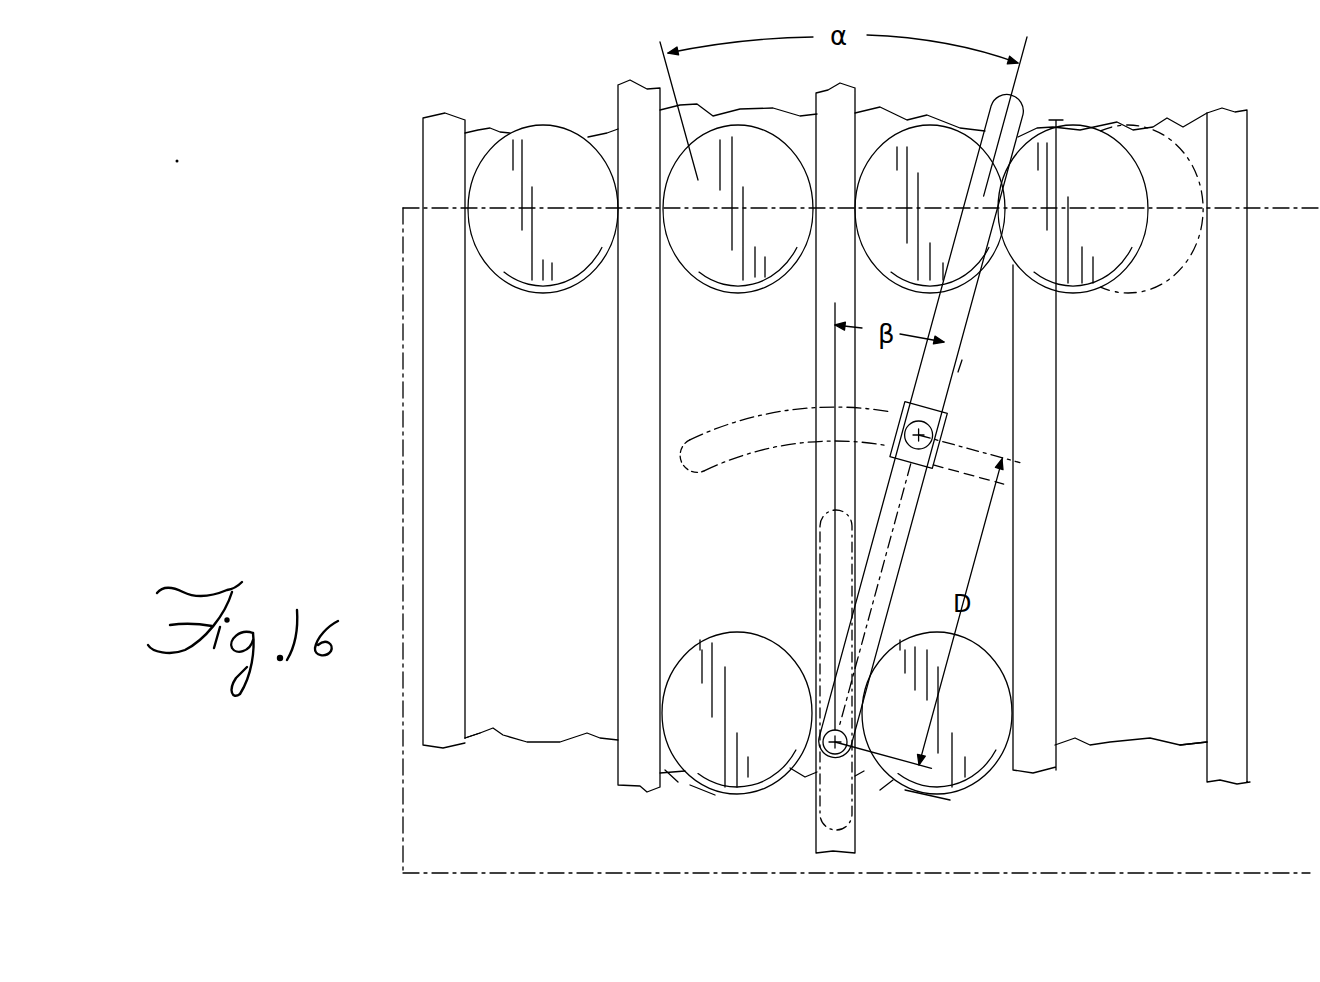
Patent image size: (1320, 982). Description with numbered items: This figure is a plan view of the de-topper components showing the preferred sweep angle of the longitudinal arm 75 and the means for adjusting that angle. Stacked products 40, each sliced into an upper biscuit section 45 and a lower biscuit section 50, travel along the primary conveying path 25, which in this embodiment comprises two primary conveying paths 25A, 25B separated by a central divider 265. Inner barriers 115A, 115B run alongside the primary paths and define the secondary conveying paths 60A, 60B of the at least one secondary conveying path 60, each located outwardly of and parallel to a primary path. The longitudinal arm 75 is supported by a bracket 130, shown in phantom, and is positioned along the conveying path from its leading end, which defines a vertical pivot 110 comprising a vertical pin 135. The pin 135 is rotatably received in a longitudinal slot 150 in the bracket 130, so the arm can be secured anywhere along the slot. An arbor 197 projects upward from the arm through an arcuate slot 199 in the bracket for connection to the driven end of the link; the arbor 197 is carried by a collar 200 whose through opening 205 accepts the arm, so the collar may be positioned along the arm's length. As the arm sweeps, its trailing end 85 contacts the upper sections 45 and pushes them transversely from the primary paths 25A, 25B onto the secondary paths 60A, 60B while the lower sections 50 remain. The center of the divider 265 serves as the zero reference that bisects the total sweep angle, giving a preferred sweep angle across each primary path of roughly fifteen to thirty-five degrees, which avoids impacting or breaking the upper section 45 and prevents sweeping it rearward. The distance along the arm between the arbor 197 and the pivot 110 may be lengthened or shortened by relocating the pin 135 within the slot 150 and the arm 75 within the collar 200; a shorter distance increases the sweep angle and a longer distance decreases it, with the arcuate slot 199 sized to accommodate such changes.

The primary conveying path 25 is at (678, 782).
The first primary conveying path 25A is at (722, 604).
The second primary conveying path 25B is at (937, 604).
The stacked product 40 is at (715, 797).
The upper biscuit section 45 is at (578, 182).
The lower biscuit section 50 is at (783, 182).
The secondary conveying path 60 is at (545, 752).
The first secondary conveying path 60A is at (511, 655).
The second secondary conveying path 60B is at (1145, 645).
The longitudinal arm 75 is at (958, 372).
The trailing end 85 is at (1020, 121).
The vertical pivot 110 is at (858, 838).
The first inner barrier 115A is at (633, 520).
The second inner barrier 115B is at (1040, 572).
The bracket 130 is at (395, 256).
The vertical pin 135 is at (825, 762).
The longitudinal slot 150 is at (810, 539).
The arbor 197 is at (905, 404).
The arcuate slot 199 is at (707, 428).
The collar 200 is at (948, 423).
The through opening 205 is at (912, 480).
The central divider 265 is at (850, 281).